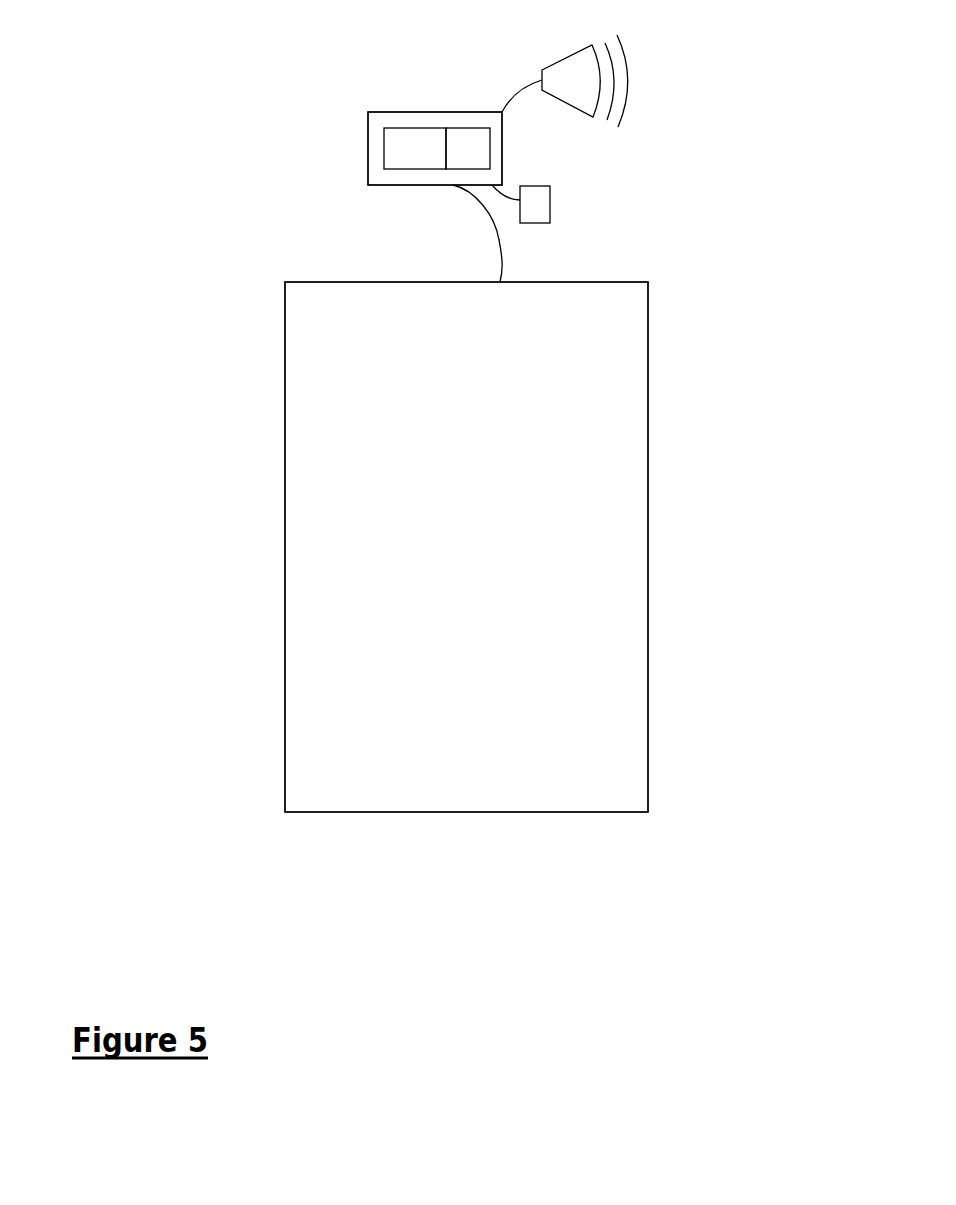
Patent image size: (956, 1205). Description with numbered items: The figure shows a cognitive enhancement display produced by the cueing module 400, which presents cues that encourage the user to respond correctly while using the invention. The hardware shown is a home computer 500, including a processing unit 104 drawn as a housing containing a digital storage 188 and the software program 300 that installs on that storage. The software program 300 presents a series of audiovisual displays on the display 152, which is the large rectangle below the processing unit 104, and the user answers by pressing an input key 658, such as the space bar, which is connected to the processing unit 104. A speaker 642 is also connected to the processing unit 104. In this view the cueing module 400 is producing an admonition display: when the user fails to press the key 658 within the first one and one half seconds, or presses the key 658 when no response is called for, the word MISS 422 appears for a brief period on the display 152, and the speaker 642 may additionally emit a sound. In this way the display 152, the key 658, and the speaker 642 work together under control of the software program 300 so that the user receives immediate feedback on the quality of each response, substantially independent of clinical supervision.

The processing unit 104 is at (413, 178).
The display 152 is at (603, 508).
The digital storage 188 is at (393, 152).
The software program 300 is at (467, 133).
The cueing module 400 is at (700, 589).
The MISS 422 is at (417, 538).
The computer 500 is at (638, 147).
The speaker 642 is at (563, 80).
The input key 658 is at (533, 192).